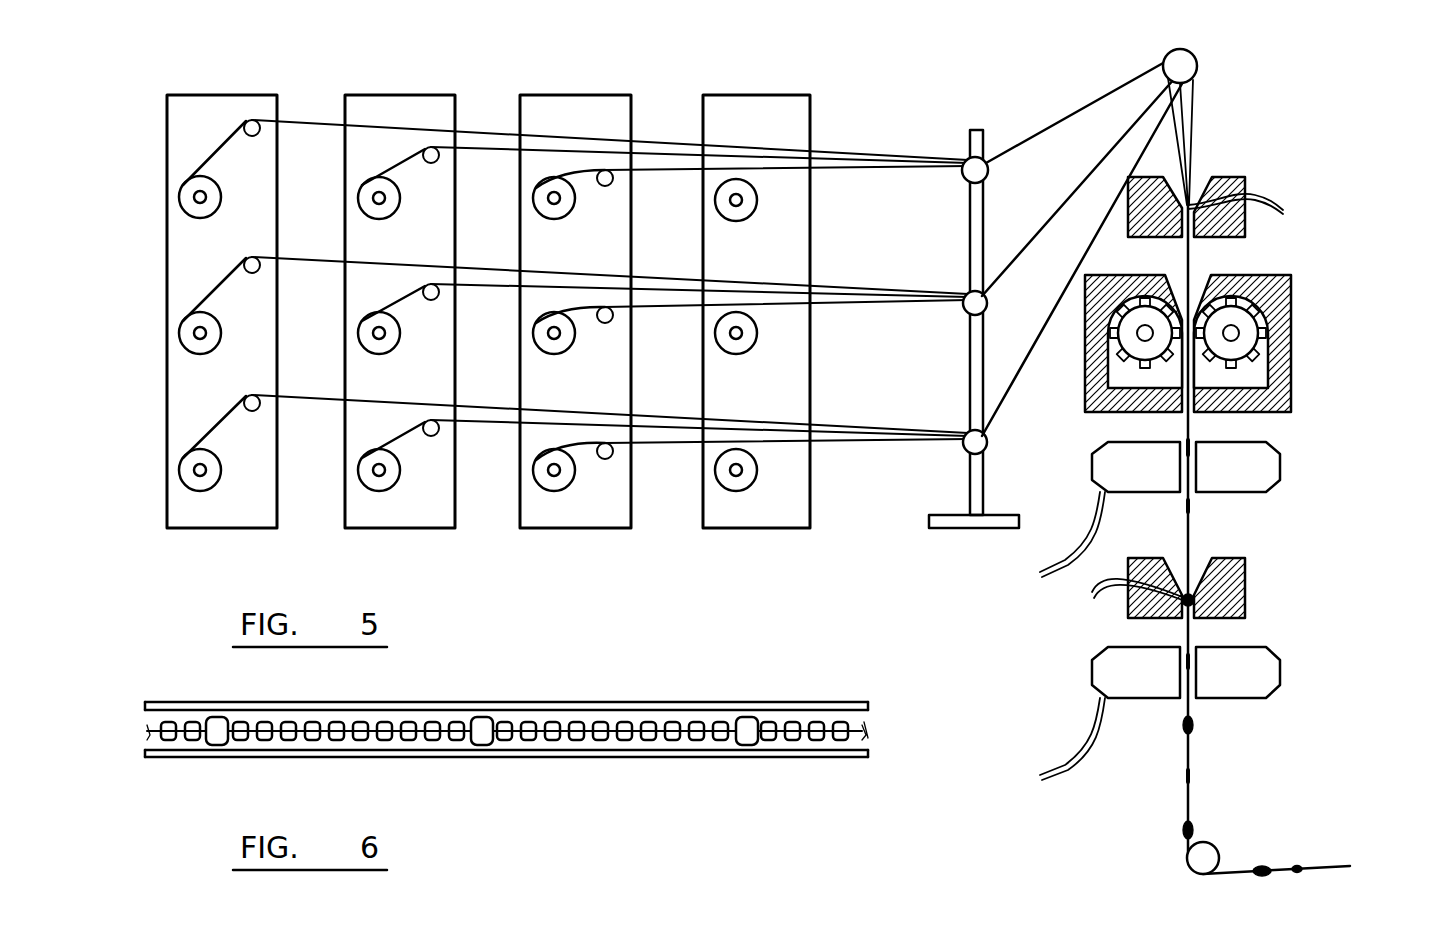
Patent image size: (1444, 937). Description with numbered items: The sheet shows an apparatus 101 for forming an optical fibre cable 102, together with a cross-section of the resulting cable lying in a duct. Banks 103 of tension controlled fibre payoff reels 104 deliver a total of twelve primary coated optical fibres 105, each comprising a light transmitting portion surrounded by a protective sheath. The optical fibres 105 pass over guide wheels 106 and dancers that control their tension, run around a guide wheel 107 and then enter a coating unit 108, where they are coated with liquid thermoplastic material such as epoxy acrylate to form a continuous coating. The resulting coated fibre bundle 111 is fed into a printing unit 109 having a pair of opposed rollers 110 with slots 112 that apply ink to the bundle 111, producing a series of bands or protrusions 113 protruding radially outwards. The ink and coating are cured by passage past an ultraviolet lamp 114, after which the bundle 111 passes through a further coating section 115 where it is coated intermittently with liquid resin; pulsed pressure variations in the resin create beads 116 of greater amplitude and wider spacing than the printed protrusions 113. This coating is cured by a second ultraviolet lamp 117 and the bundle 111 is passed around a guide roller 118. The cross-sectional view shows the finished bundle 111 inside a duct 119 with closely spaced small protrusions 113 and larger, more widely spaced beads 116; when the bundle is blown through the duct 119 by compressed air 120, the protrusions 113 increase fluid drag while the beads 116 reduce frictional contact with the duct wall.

In FIG. 5, the apparatus 101 is at (640, 547).
In FIG. 5, the optical fibre cable 102 is at (1186, 810).
In FIG. 6, the optical fibre cable 102 is at (665, 745).
In FIG. 5, the banks 103 is at (538, 507).
In FIG. 5, the fibre payoff reels 104 is at (360, 326).
In FIG. 5, the primary coated optical fibres 105 is at (300, 125).
In FIG. 5, the guide wheels 106 is at (968, 168).
In FIG. 5, the guide wheel 107 is at (1185, 65).
In FIG. 5, the coating unit 108 is at (1230, 175).
In FIG. 5, the printing unit 109 is at (1220, 350).
In FIG. 5, the opposed rollers 110 is at (1252, 342).
In FIG. 5, the coated fibre bundle 111 is at (1190, 255).
In FIG. 5, the slots 112 is at (1112, 373).
In FIG. 5, the protrusions 113 is at (1188, 422).
In FIG. 6, the protrusions 113 is at (653, 733).
In FIG. 5, the ultraviolet lamp 114 is at (1266, 470).
In FIG. 5, the further coating section 115 is at (1215, 578).
In FIG. 5, the beads 116 is at (1194, 600).
In FIG. 6, the beads 116 is at (215, 740).
In FIG. 5, the second ultraviolet lamp 117 is at (1262, 672).
In FIG. 5, the guide roller 118 is at (1198, 860).
In FIG. 6, the duct 119 is at (765, 706).
In FIG. 6, the compressed air 120 is at (568, 745).